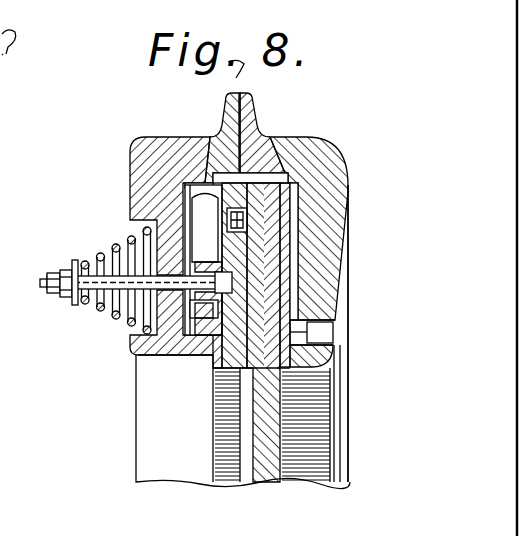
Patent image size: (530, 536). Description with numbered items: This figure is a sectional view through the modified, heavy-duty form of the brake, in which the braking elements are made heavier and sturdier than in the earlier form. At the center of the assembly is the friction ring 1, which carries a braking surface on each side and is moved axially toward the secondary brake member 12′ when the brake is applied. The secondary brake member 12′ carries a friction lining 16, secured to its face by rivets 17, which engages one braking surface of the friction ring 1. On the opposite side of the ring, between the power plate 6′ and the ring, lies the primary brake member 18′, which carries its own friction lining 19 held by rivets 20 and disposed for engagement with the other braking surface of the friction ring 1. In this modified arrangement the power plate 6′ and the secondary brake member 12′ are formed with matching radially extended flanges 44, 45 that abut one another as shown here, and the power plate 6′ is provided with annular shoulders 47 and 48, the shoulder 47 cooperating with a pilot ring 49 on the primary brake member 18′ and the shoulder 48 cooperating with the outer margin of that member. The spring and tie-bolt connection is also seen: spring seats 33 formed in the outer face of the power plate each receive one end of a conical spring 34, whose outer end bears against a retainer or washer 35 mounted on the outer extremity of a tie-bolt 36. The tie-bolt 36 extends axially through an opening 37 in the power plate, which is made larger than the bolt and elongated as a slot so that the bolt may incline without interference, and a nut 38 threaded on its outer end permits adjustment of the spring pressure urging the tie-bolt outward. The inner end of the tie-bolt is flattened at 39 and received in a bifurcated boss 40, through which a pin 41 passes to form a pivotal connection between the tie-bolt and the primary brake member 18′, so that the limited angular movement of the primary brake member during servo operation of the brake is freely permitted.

The friction ring 1 is at (262, 476).
The power plate 6′ is at (136, 170).
The secondary brake member 12′ is at (343, 178).
The friction lining 16 is at (287, 286).
The rivets 17 is at (300, 328).
The primary brake member 18′ is at (212, 372).
The friction lining 19 is at (343, 224).
The rivets 20 is at (262, 198).
The spring seats 33 is at (168, 312).
The conical spring 34 is at (102, 309).
The retainer or washer 35 is at (70, 271).
The tie-bolt 36 is at (47, 280).
The opening 37 is at (110, 262).
The nut 38 is at (73, 297).
The flattened end 39 is at (250, 277).
The bifurcated boss 40 is at (200, 270).
The pin 41 is at (215, 268).
The radially extended flange 44 is at (227, 107).
The radially extended flange 45 is at (253, 107).
The annular shoulder 47 is at (195, 352).
The annular shoulder 48 is at (200, 185).
The pilot ring 49 is at (140, 357).